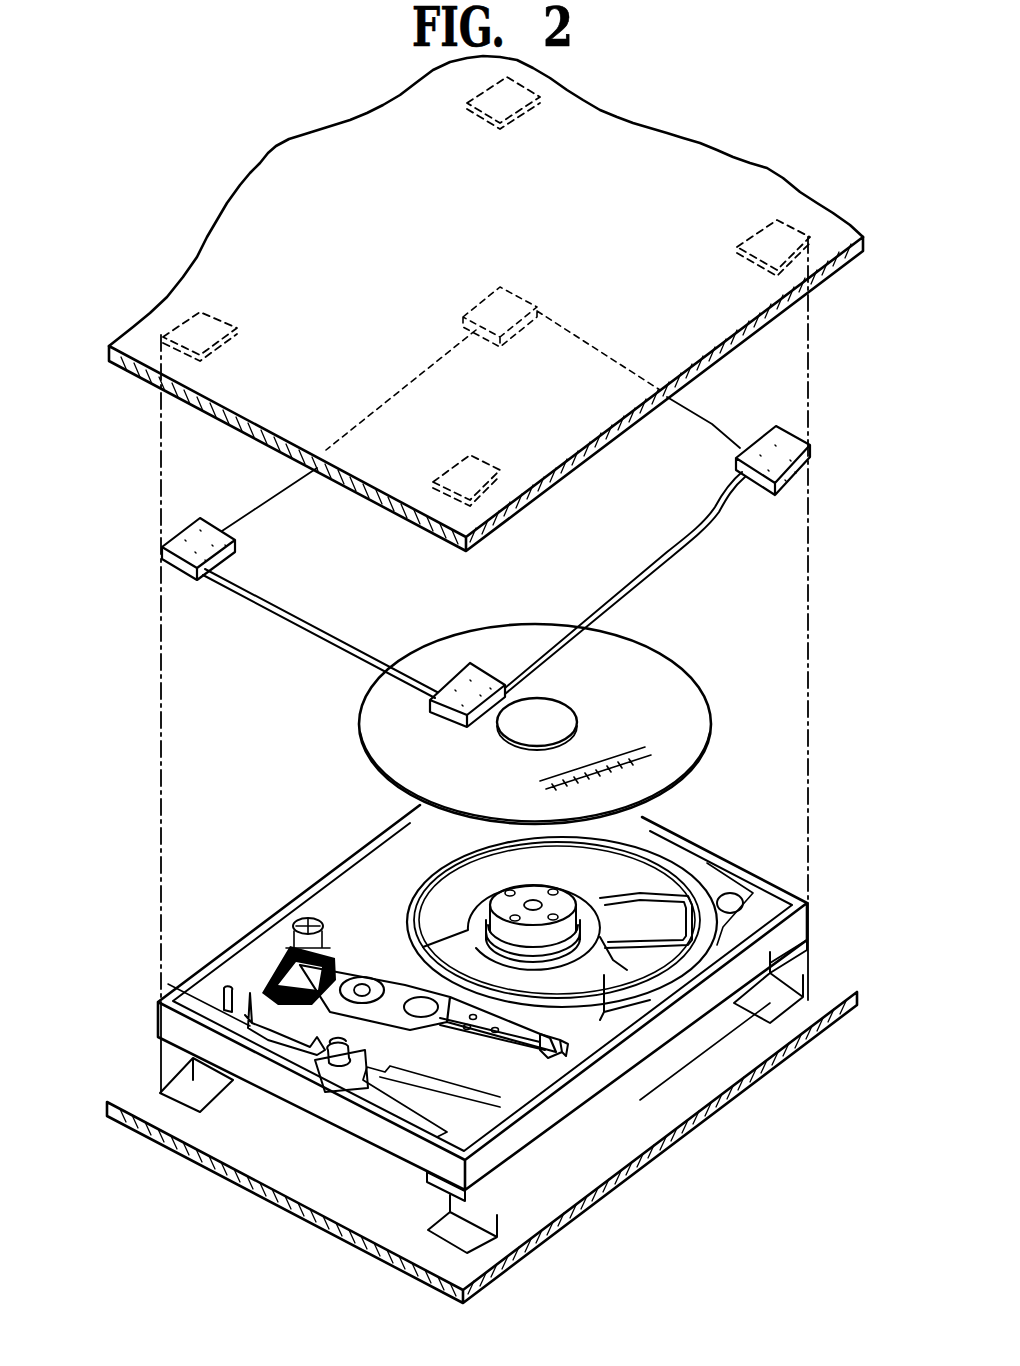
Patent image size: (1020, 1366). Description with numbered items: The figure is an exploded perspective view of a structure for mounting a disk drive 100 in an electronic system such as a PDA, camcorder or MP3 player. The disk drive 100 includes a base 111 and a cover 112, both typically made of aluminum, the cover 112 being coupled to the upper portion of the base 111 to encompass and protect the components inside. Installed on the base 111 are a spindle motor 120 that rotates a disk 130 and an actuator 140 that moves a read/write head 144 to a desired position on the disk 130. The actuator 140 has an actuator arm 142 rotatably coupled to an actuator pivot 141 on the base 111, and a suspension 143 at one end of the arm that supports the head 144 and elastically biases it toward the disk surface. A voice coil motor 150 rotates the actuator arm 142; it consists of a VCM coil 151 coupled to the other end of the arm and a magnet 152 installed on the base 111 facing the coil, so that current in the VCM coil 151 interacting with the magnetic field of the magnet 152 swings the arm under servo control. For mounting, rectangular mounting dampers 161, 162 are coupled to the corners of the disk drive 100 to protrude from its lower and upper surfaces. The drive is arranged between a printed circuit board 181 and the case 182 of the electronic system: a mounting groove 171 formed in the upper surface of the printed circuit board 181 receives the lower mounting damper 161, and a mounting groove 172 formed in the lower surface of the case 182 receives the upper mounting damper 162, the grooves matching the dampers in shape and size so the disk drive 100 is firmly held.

The disk drive 100 is at (336, 832).
The base 111 is at (772, 900).
The cover 112 is at (688, 549).
The spindle motor 120 is at (508, 890).
The disk 130 is at (680, 690).
The actuator 140 is at (481, 1009).
The actuator pivot 141 is at (312, 918).
The actuator arm 142 is at (394, 985).
The suspension 143 is at (456, 1033).
The read/write head 144 is at (570, 1043).
The voice coil motor 150 is at (251, 951).
The VCM coil 151 is at (282, 960).
The magnet 152 is at (250, 992).
The mounting damper 161 is at (812, 957).
The mounting damper 162 is at (228, 561).
The mounting groove 171 is at (200, 1095).
The mounting groove 172 is at (214, 325).
The printed circuit board 181 is at (686, 1138).
The case 182 is at (762, 178).